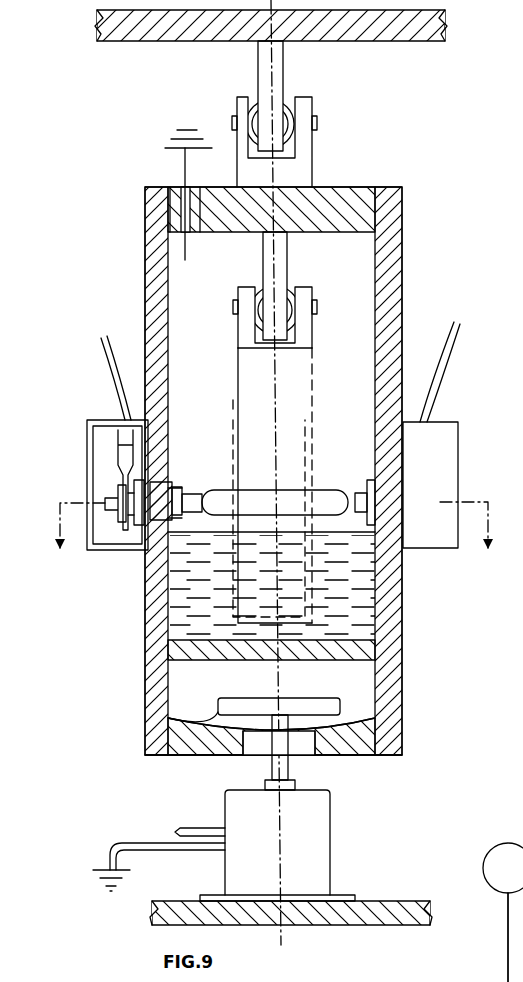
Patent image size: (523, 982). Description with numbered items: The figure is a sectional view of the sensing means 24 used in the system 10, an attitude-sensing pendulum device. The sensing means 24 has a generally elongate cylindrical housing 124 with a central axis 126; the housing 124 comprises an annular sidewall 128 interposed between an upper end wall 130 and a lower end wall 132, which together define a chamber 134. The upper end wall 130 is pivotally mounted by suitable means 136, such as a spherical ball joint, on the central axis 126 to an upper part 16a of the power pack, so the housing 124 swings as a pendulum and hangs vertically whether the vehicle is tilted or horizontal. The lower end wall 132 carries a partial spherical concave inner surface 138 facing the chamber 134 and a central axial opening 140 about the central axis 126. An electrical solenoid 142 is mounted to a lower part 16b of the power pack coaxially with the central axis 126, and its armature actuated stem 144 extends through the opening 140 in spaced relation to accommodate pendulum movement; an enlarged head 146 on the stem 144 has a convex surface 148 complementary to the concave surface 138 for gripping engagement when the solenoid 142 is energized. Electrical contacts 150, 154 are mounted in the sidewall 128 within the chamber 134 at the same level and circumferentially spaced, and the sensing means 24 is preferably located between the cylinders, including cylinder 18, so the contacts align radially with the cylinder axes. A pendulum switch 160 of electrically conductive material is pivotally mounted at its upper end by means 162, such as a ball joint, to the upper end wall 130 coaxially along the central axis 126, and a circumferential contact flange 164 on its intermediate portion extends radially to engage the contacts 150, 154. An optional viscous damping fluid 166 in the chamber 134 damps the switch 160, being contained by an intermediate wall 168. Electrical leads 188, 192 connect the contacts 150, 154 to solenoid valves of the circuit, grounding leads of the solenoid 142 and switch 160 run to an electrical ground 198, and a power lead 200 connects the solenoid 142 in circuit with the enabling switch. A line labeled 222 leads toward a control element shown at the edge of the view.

The system 10 is at (272, 546).
The upper part of power pack 16a is at (170, 43).
The lower part of power pack 16b is at (401, 900).
The cylinder 18 is at (516, 843).
The sensing means 24 is at (422, 242).
The housing 124 is at (404, 259).
The central axis 126 is at (262, 66).
The sidewall 128 is at (402, 303).
The upper end wall 130 is at (352, 190).
The lower end wall 132 is at (370, 752).
The chamber 134 is at (232, 262).
The pivot means 136 is at (285, 110).
The concave inner surface 138 is at (358, 720).
The axial opening 140 is at (300, 757).
The electrical solenoid 142 is at (330, 840).
The armature actuated stem 144 is at (270, 768).
The enlarged head 146 is at (320, 698).
The convex surface 148 is at (228, 716).
The electrical contact 150 is at (366, 490).
The electrical contact 154 is at (186, 492).
The pendulum switch 160 is at (332, 372).
The pivot means 162 is at (290, 292).
The contact flange 164 is at (338, 490).
The viscous damping fluid 166 is at (372, 606).
The intermediate wall 168 is at (362, 652).
The electrical lead 188 is at (456, 364).
The electrical lead 192 is at (104, 354).
The electrical ground 198 is at (105, 868).
The power lead 200 is at (213, 826).
The control line 222 is at (508, 948).